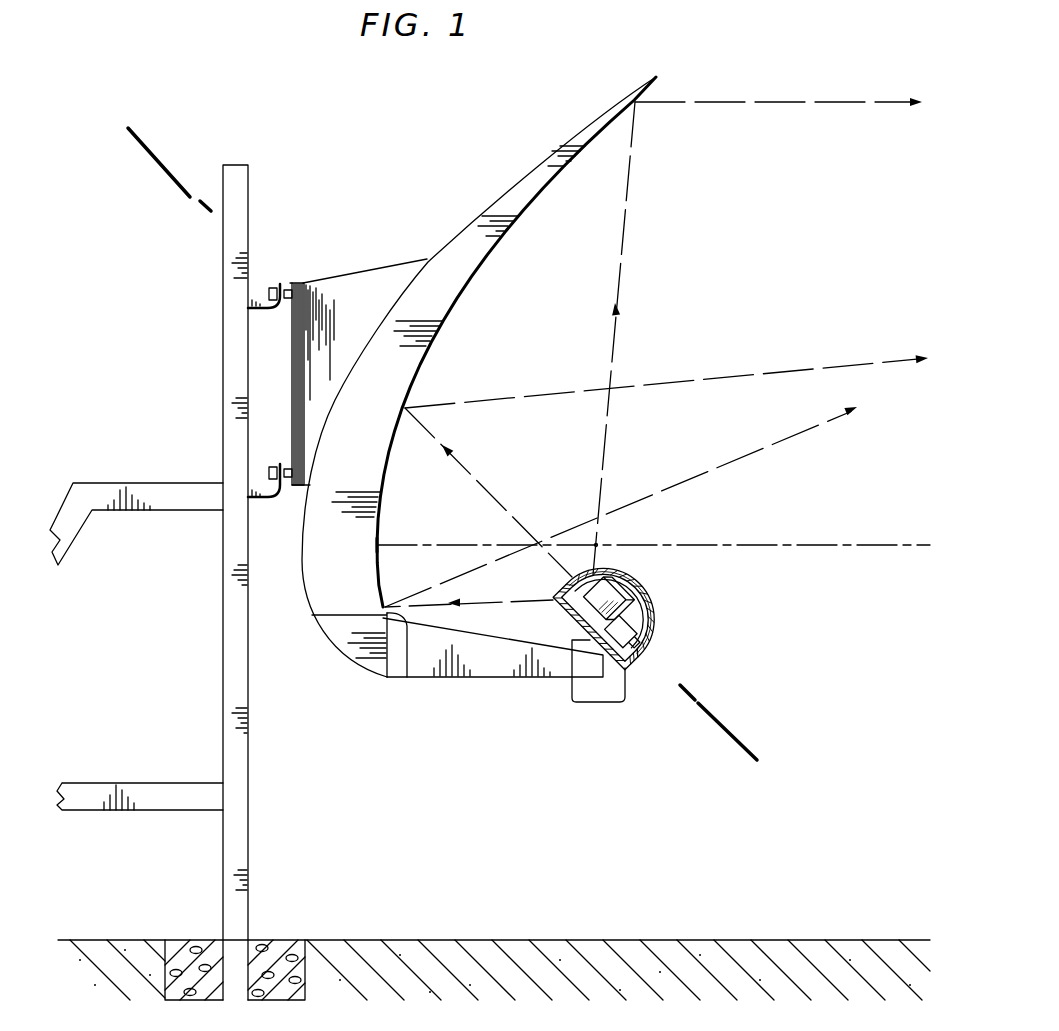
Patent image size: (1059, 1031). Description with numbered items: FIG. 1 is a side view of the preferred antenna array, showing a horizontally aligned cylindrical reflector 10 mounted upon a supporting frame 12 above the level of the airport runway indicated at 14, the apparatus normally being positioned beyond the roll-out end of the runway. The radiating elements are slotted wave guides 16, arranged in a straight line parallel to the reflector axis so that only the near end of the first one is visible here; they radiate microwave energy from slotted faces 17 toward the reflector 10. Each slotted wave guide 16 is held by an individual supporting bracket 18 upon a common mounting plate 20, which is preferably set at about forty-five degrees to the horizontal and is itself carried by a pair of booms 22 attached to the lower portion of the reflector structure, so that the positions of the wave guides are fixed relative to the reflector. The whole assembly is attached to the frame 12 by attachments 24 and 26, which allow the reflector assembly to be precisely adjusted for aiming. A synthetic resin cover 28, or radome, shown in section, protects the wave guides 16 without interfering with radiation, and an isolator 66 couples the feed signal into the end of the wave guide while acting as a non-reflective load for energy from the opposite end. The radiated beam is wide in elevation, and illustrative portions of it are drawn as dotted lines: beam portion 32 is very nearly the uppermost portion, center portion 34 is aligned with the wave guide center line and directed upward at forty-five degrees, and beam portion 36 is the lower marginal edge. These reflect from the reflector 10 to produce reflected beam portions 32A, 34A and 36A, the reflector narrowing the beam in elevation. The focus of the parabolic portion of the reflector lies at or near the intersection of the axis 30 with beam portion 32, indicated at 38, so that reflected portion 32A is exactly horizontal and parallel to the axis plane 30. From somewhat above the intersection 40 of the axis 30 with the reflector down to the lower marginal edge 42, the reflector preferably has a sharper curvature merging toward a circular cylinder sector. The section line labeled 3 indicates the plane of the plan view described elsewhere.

The section line 3- 3 is at (150, 136).
The cylindrical reflector 10 is at (473, 278).
The supporting frame 12 is at (249, 206).
The level of the runway 14 is at (470, 939).
The slotted wave guide 16 is at (617, 605).
The slotted face 17 is at (620, 603).
The supporting bracket 18 is at (609, 598).
The mounting plate 20 is at (627, 690).
The boom 22 is at (497, 668).
The attachment 24 is at (283, 283).
The attachment 26 is at (280, 463).
The synthetic resin cover 28 is at (610, 608).
The axis 30 is at (833, 548).
The beam portion 32 is at (618, 332).
The reflected beam portion 32A is at (852, 101).
The center portion of the beam 34 is at (467, 470).
The reflected beam portion 34A is at (866, 362).
The lower marginal edge portion of the beam 36 is at (470, 600).
The reflected beam portion 36A is at (810, 427).
The focus 38 is at (600, 541).
The intersection of the axis with the reflector 40 is at (378, 541).
The lower marginal edge 42 is at (407, 675).
The isolator 66 is at (657, 620).